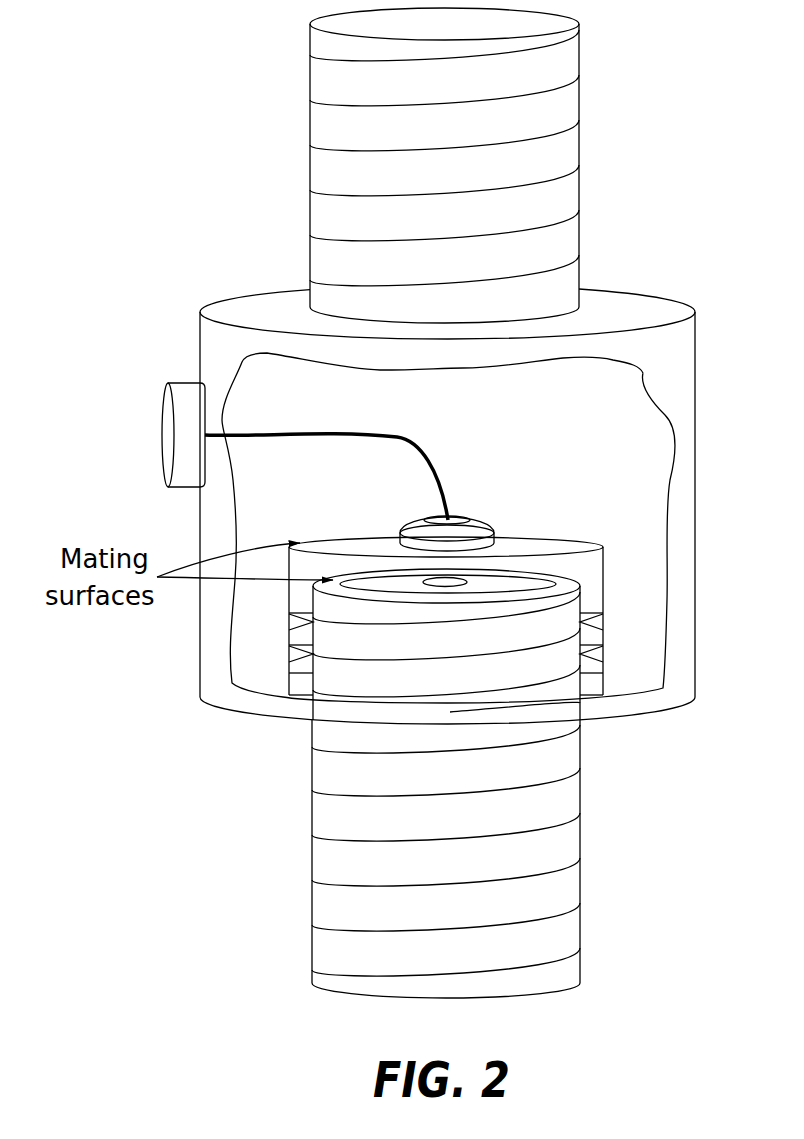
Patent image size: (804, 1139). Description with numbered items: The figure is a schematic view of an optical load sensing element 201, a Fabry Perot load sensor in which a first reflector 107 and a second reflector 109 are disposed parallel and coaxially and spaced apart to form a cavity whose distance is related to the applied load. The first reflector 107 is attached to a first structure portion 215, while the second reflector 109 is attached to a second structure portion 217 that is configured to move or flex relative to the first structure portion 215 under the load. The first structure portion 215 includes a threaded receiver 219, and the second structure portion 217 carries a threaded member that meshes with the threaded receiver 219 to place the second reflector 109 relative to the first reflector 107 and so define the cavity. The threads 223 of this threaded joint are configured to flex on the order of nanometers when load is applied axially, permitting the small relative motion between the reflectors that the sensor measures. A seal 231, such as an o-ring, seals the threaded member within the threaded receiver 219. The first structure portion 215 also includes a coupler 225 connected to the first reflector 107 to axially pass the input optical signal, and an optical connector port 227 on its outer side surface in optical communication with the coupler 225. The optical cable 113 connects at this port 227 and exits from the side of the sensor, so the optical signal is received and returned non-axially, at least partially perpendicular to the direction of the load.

The optical load sensing element 201 is at (703, 126).
The optical cable 113 is at (283, 423).
The optical connector port 227 is at (147, 420).
The coupler 225 is at (477, 517).
The first structure portion 215 is at (678, 508).
The first reflector 107 is at (584, 469).
The second reflector 109 is at (485, 582).
The threaded receiver 219 is at (287, 600).
The seal 231 is at (592, 698).
The second structure portion 217 is at (445, 859).
The threads 223 is at (560, 845).